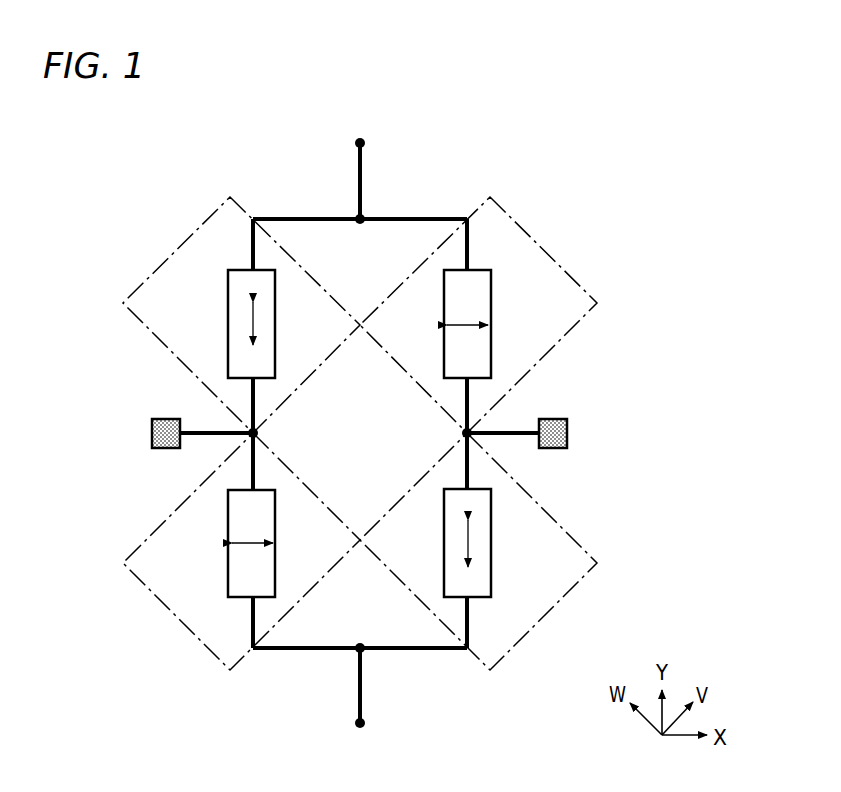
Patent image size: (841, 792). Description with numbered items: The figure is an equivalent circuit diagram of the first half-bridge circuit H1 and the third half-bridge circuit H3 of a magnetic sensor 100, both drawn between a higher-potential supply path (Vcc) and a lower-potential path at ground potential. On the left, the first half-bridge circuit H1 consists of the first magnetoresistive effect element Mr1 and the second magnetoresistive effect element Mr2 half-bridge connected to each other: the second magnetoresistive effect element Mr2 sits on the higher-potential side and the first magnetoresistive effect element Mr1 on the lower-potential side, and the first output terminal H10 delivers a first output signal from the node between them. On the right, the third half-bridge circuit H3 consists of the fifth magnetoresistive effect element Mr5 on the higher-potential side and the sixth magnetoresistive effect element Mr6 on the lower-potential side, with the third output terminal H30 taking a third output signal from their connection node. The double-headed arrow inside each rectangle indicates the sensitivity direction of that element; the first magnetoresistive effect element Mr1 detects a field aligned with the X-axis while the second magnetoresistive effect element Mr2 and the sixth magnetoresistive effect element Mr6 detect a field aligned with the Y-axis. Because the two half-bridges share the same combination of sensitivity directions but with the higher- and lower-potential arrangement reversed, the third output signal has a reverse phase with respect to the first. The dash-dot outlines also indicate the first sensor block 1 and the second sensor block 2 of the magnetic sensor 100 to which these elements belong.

The magnetic sensor 100 is at (580, 153).
The first half-bridge circuit H1 is at (198, 208).
The third half-bridge circuit H3 is at (505, 197).
The first sensor block 1 is at (195, 634).
The second sensor block 2 is at (527, 633).
The first magnetoresistive effect element Mr1 is at (222, 558).
The second magnetoresistive effect element Mr2 is at (222, 299).
The fifth magnetoresistive effect element Mr5 is at (499, 299).
The sixth magnetoresistive effect element Mr6 is at (493, 557).
The first output terminal H10 is at (167, 421).
The third output terminal H30 is at (553, 421).